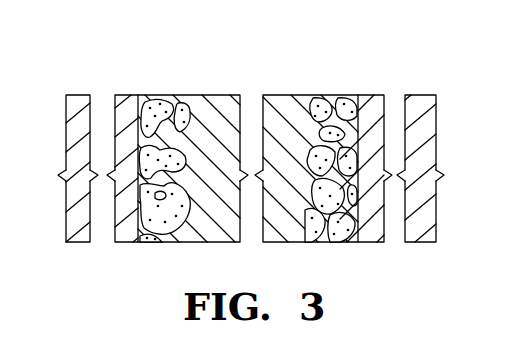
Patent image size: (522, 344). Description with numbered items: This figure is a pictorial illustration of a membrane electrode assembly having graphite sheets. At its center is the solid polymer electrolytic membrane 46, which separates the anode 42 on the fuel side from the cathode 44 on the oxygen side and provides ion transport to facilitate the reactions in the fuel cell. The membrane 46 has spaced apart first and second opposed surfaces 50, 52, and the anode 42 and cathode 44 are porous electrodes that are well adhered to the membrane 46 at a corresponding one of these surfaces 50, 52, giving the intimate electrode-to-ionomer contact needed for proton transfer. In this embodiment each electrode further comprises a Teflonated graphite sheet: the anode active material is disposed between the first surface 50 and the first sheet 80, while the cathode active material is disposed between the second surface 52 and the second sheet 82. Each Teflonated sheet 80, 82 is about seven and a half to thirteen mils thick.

The anode 42 is at (168, 243).
The cathode 44 is at (335, 243).
The solid polymer electrolytic membrane 46 is at (229, 96).
The first surface 50 is at (192, 116).
The second surface 52 is at (313, 118).
The first Teflonated graphite sheet 80 is at (128, 96).
The second Teflonated graphite sheet 82 is at (372, 96).